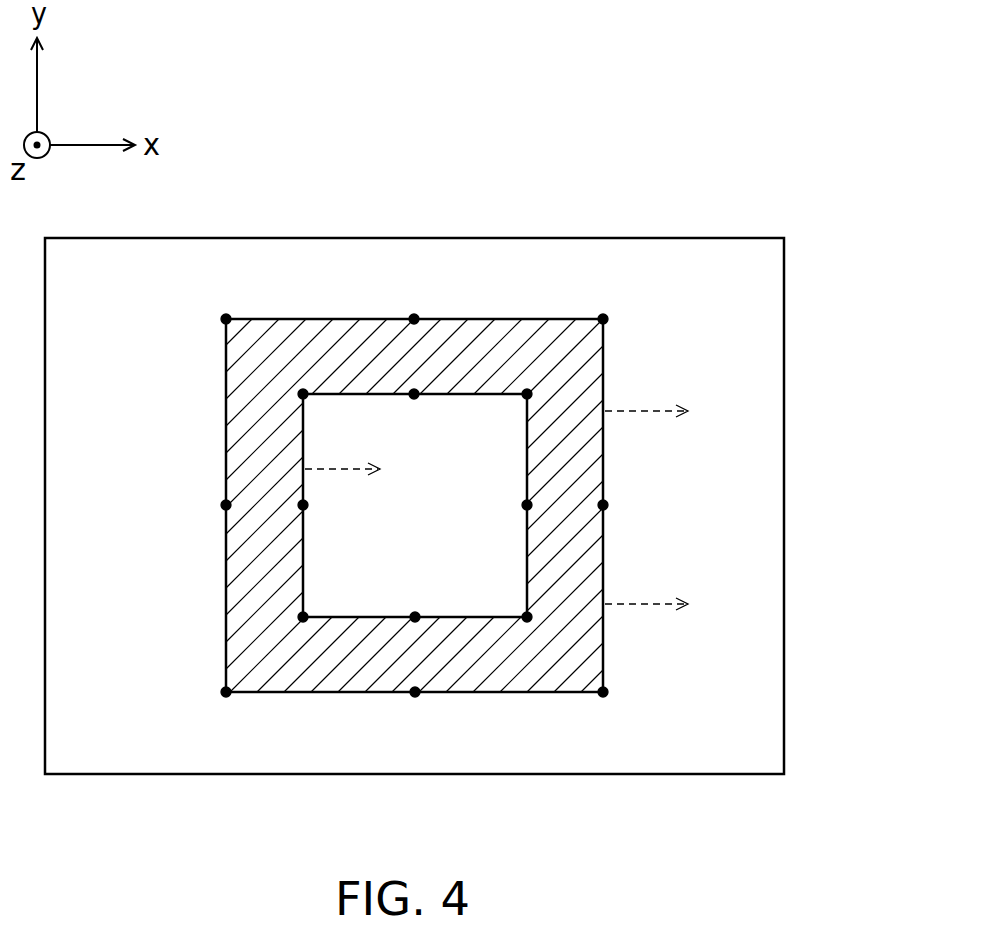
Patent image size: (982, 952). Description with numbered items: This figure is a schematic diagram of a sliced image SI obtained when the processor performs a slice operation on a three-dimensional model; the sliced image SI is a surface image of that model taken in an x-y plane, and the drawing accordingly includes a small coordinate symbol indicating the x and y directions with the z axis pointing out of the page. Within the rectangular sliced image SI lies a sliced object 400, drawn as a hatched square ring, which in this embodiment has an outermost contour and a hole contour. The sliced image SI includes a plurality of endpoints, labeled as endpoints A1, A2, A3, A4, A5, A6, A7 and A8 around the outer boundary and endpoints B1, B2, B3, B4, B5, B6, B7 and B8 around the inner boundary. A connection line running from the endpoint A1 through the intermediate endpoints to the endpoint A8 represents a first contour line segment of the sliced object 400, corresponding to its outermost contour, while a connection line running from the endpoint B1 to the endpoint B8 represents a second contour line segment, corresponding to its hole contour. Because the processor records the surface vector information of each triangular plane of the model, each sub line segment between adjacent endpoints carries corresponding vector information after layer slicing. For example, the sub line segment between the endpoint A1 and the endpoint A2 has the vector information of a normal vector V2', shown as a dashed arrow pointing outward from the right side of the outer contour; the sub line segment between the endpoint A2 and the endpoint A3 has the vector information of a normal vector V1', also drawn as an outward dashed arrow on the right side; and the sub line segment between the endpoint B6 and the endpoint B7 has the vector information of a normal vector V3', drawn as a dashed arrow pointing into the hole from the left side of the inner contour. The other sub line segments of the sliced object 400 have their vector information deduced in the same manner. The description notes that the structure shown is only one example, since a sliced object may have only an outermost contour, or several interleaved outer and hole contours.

The sliced object 400 is at (493, 354).
The sliced image SI is at (697, 237).
The endpoint A1 is at (607, 319).
The endpoint A2 is at (607, 505).
The endpoint A3 is at (607, 692).
The endpoint A4 is at (414, 696).
The endpoint A5 is at (222, 692).
The endpoint A6 is at (222, 505).
The endpoint A7 is at (222, 319).
The endpoint A8 is at (414, 316).
The endpoint B1 is at (524, 398).
The endpoint B2 is at (523, 505).
The endpoint B3 is at (524, 613).
The endpoint B4 is at (415, 613).
The endpoint B5 is at (306, 613).
The endpoint B6 is at (307, 505).
The endpoint B7 is at (306, 398).
The endpoint B8 is at (414, 398).
The normal vector V1' is at (667, 602).
The normal vector V2' is at (667, 409).
The normal vector V3' is at (363, 468).